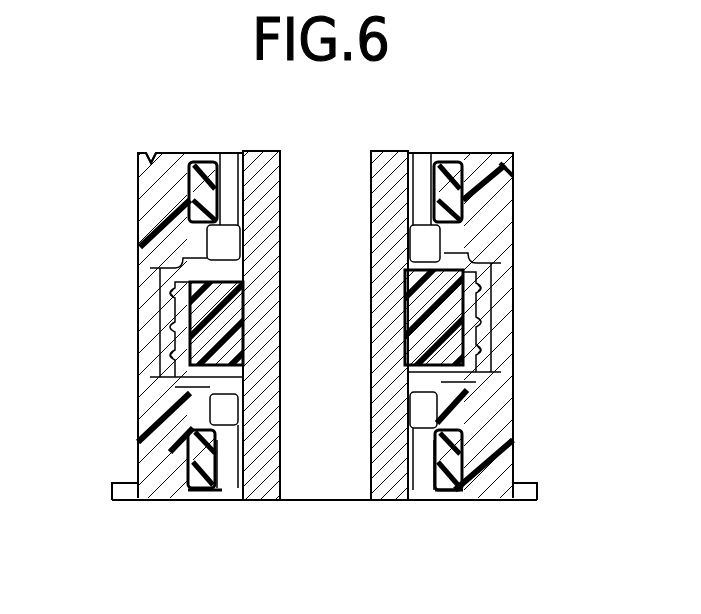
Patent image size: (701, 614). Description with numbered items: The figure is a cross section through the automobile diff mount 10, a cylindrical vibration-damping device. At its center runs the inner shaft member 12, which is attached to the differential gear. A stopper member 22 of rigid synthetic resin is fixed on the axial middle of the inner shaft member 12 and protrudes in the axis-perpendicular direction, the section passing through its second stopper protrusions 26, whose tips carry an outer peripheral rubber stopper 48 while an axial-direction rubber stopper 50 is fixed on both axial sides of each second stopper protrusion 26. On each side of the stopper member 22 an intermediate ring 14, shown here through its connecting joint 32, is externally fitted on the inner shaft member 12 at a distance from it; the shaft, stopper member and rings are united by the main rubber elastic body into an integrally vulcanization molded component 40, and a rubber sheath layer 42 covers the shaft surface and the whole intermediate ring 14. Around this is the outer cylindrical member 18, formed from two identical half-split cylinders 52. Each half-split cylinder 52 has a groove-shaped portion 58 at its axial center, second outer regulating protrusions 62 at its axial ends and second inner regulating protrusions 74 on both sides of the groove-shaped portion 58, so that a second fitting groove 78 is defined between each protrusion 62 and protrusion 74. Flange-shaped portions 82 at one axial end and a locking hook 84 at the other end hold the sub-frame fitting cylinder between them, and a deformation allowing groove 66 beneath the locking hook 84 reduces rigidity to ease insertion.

The diff mount 10 is at (96, 127).
The inner shaft member 12 is at (313, 149).
The intermediate ring 14 is at (189, 495).
The outer cylindrical member 18 is at (132, 292).
The stopper member 22 is at (176, 336).
The second stopper protrusion 26 is at (198, 300).
The connecting joint 32 is at (192, 175).
The integrally vulcanization molded component 40 is at (421, 503).
The rubber sheath layer 42 is at (222, 410).
The outer peripheral rubber stopper 48 is at (170, 357).
The axial-direction rubber stopper 50 is at (205, 378).
The half-split cylinder 52 is at (150, 457).
The groove-shaped portion 58 is at (168, 306).
The second outer regulating protrusion 62 is at (201, 161).
The deformation allowing groove 66 is at (151, 158).
The second inner regulating protrusion 74 is at (200, 247).
The second fitting groove 78 is at (190, 200).
The flange-shaped portion 82 is at (118, 490).
The locking hook 84 is at (508, 161).